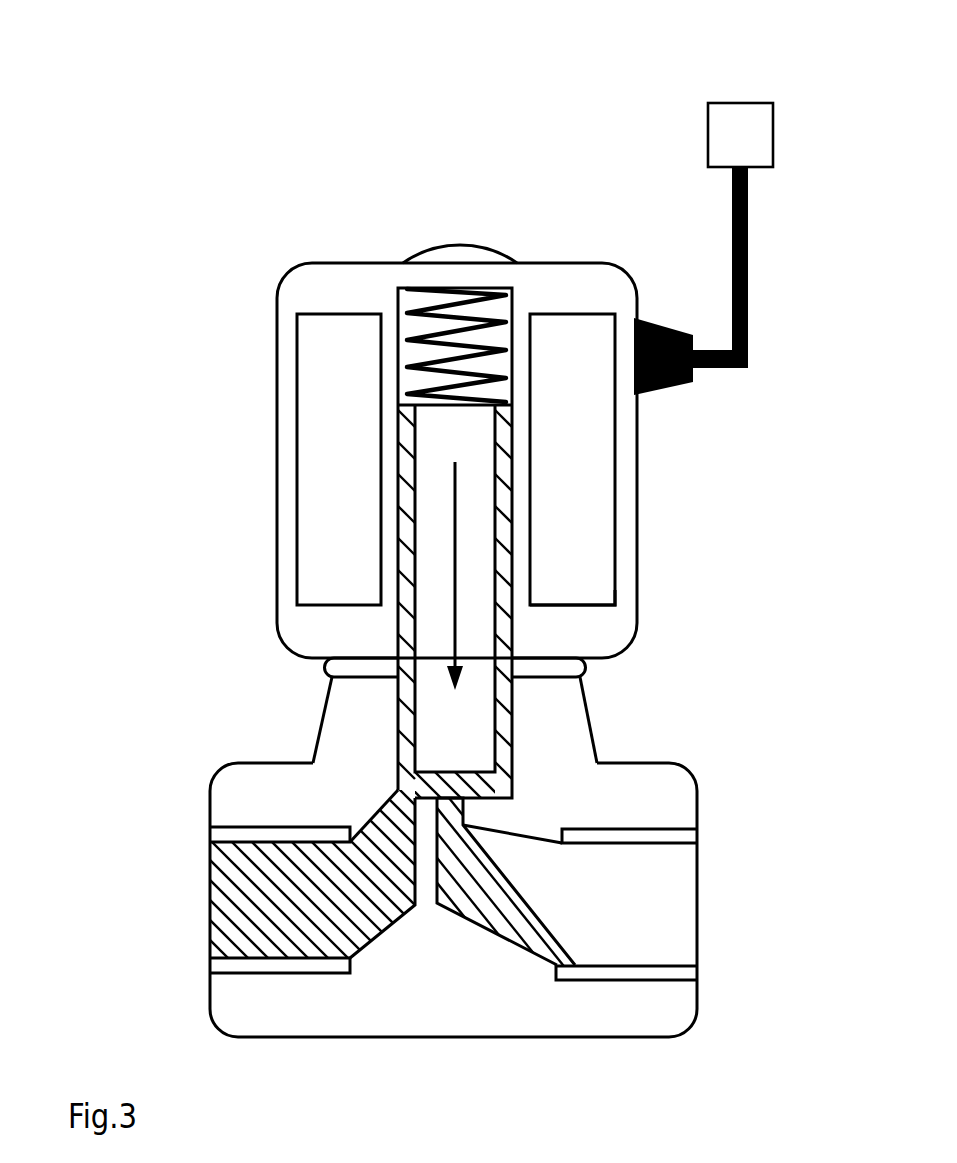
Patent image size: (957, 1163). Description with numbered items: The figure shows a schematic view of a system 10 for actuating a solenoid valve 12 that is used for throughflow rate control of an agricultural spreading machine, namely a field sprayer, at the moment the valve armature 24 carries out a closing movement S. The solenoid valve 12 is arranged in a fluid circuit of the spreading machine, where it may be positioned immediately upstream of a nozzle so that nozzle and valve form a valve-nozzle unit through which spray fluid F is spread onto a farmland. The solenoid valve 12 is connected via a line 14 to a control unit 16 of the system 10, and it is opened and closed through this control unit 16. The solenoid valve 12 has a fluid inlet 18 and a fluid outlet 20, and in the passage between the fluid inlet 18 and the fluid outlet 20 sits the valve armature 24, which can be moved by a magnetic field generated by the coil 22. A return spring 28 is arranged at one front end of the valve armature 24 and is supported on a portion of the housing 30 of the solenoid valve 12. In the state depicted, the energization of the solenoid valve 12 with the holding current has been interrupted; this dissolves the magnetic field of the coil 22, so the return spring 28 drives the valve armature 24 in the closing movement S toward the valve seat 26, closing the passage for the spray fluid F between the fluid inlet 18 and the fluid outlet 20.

The system 10 is at (271, 112).
The solenoid valve 12 is at (297, 270).
The line 14 is at (748, 258).
The control unit 16 is at (759, 150).
The fluid inlet 18 is at (170, 870).
The fluid outlet 20 is at (712, 841).
The coil 22 is at (590, 493).
The valve armature 24 is at (448, 527).
The valve seat 26 is at (477, 782).
The return spring 28 is at (437, 300).
The housing 30 is at (605, 605).
The closing movement S is at (455, 622).
The spray fluid F is at (267, 863).